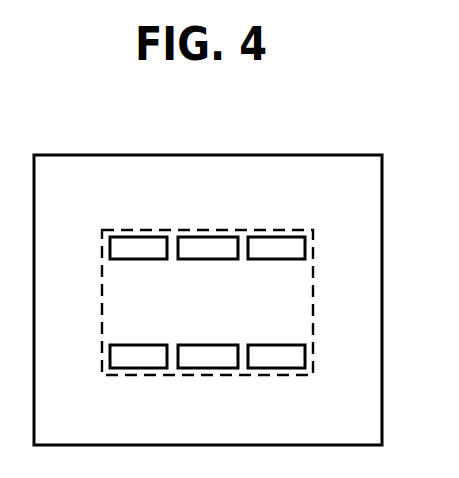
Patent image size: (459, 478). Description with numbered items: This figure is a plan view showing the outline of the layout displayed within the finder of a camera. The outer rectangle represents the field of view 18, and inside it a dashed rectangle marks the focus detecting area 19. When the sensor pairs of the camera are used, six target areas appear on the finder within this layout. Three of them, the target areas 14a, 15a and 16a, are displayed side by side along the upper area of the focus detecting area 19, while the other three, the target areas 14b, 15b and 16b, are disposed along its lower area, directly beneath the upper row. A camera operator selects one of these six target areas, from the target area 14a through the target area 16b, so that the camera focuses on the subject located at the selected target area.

The field of view 18 is at (381, 227).
The focus detecting area 19 is at (313, 323).
The target area 14a is at (118, 240).
The target area 15a is at (200, 242).
The target area 16a is at (265, 242).
The target area 14b is at (139, 360).
The target area 15b is at (203, 360).
The target area 16b is at (273, 365).